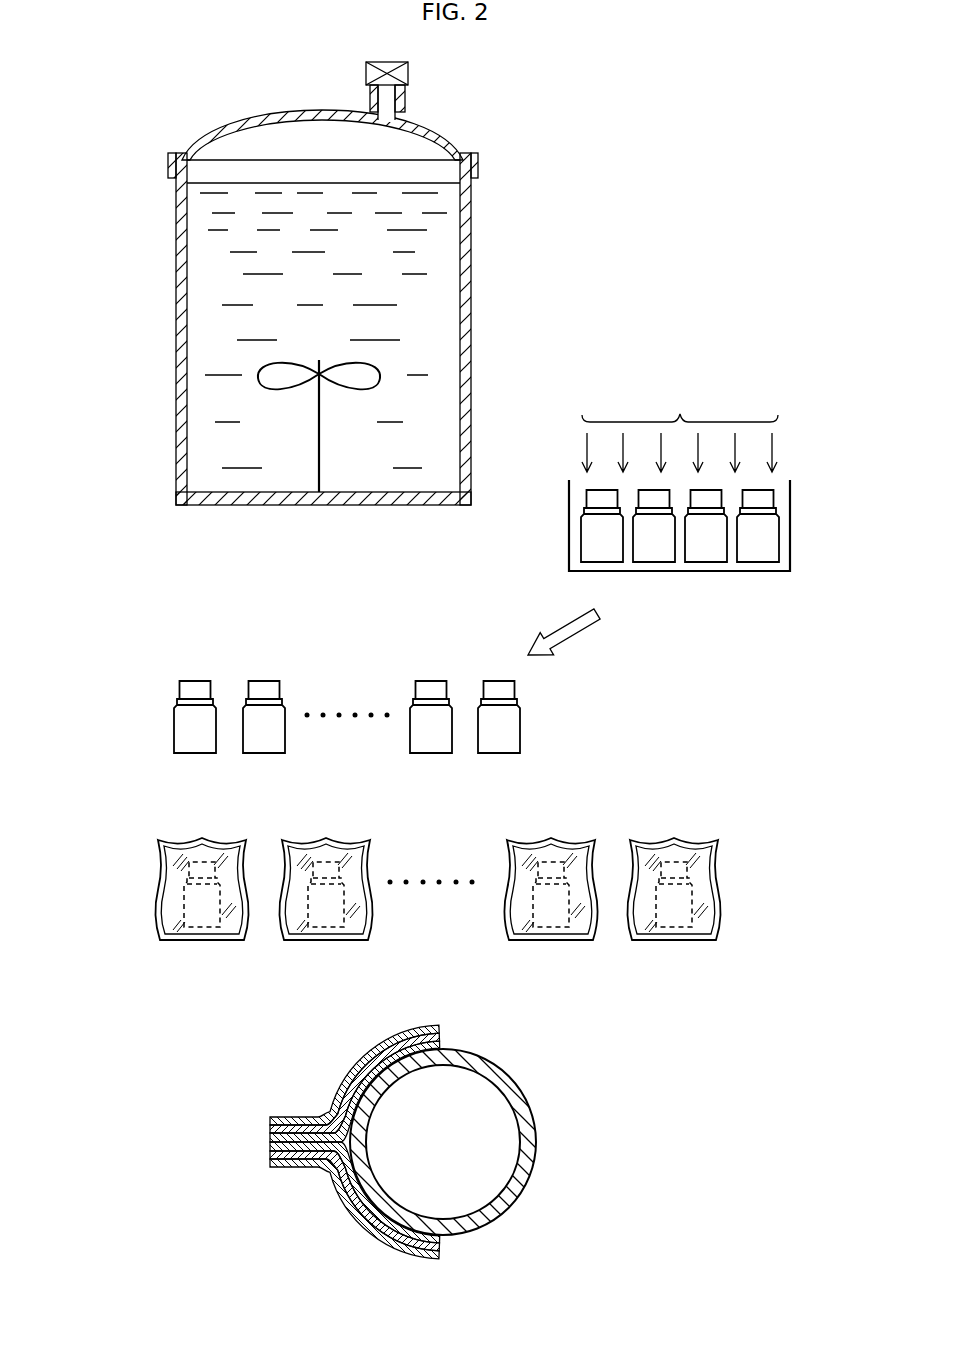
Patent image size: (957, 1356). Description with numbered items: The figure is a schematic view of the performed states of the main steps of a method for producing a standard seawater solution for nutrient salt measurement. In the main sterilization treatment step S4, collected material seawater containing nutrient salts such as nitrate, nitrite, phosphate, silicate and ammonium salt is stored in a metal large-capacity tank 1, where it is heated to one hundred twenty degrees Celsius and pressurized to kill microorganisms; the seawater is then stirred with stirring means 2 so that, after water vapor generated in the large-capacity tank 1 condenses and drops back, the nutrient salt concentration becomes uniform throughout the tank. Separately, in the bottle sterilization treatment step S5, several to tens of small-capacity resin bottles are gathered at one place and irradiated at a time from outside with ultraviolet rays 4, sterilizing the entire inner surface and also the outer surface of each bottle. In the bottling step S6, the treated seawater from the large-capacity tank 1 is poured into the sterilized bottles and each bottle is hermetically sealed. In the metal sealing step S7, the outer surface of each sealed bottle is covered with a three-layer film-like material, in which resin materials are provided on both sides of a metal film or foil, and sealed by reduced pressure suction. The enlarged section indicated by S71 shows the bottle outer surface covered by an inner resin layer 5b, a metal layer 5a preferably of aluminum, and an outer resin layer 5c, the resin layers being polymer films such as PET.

The large-capacity tank 1 is at (482, 232).
The stirring means 2 is at (350, 380).
The ultraviolet rays 4 is at (680, 429).
The metal layer 5a is at (441, 1037).
The resin layer 5b is at (441, 1045).
The resin layer 5c is at (441, 1025).
The main sterilization treatment step S4 is at (518, 155).
The bottle sterilization treatment step S5 is at (808, 426).
The bottling step S6 is at (141, 642).
The metal sealing step S7 is at (138, 822).
The sealed state of the bottle S71 is at (334, 1049).